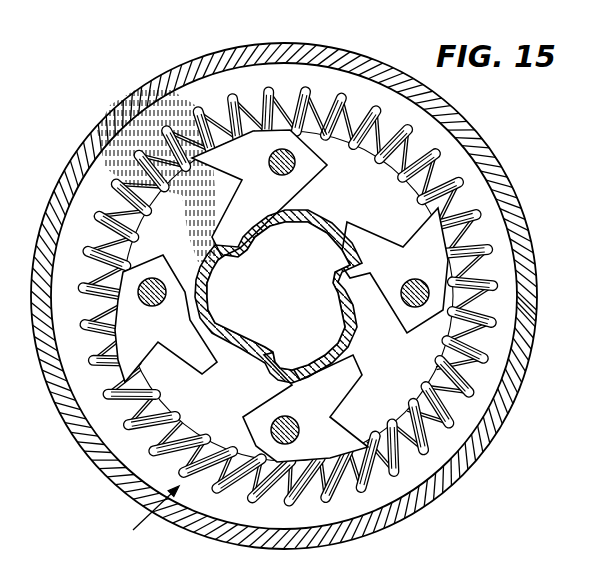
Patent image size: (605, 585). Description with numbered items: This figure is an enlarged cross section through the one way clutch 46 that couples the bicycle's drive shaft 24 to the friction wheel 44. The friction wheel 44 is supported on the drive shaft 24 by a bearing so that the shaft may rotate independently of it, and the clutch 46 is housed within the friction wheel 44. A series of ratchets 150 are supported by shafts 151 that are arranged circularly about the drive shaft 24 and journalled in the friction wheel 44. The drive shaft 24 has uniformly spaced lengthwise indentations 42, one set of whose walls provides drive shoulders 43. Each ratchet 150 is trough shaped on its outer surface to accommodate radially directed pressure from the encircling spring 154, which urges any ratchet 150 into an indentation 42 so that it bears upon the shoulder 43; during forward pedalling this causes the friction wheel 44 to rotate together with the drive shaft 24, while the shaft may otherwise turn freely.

The drive shaft 24 is at (328, 247).
The lengthwise indentations 42 is at (353, 303).
The drive shoulders 43 is at (288, 279).
The friction wheel 44 is at (198, 88).
The one way clutch 46 is at (139, 518).
The ratchets 150 is at (376, 228).
The shafts 151 is at (308, 428).
The encircling spring 154 is at (431, 163).